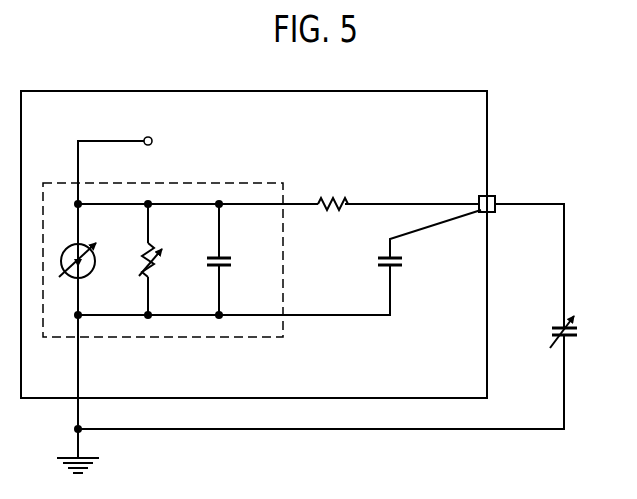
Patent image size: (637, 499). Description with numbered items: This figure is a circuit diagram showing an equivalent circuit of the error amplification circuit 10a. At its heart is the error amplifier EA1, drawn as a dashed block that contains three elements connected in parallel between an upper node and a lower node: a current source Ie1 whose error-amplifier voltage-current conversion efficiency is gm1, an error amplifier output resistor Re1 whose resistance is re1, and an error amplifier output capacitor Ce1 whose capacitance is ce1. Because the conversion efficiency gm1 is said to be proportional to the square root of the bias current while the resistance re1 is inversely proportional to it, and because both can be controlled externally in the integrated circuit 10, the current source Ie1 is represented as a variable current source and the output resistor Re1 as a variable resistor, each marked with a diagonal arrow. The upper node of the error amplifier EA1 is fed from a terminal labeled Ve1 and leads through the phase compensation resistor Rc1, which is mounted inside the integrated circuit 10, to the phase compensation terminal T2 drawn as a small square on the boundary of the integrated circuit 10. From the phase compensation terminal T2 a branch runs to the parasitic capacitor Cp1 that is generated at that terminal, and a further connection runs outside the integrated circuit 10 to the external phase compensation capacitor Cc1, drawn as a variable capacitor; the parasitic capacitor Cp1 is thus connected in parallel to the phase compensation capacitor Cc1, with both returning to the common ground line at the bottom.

The integrated circuit 10 is at (97, 90).
The error amplification circuit 10a is at (455, 72).
The voltage source terminal Ve1 is at (155, 130).
The error amplifier EA1 is at (234, 182).
The current source Ie1 is at (96, 276).
The error amplifier output resistor Re1 is at (155, 276).
The error amplifier output capacitor Ce1 is at (228, 271).
The phase compensation resistor Rc1 is at (344, 203).
The phase compensation terminal T2 is at (496, 201).
The parasitic capacitor Cp1 is at (400, 272).
The phase compensation capacitor Cc1 is at (574, 345).